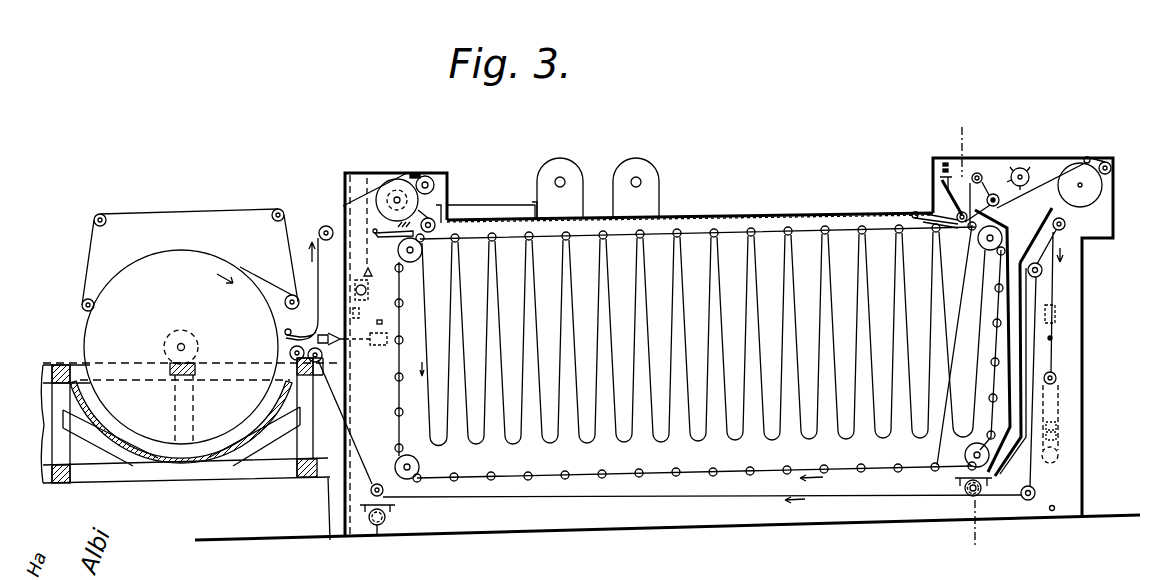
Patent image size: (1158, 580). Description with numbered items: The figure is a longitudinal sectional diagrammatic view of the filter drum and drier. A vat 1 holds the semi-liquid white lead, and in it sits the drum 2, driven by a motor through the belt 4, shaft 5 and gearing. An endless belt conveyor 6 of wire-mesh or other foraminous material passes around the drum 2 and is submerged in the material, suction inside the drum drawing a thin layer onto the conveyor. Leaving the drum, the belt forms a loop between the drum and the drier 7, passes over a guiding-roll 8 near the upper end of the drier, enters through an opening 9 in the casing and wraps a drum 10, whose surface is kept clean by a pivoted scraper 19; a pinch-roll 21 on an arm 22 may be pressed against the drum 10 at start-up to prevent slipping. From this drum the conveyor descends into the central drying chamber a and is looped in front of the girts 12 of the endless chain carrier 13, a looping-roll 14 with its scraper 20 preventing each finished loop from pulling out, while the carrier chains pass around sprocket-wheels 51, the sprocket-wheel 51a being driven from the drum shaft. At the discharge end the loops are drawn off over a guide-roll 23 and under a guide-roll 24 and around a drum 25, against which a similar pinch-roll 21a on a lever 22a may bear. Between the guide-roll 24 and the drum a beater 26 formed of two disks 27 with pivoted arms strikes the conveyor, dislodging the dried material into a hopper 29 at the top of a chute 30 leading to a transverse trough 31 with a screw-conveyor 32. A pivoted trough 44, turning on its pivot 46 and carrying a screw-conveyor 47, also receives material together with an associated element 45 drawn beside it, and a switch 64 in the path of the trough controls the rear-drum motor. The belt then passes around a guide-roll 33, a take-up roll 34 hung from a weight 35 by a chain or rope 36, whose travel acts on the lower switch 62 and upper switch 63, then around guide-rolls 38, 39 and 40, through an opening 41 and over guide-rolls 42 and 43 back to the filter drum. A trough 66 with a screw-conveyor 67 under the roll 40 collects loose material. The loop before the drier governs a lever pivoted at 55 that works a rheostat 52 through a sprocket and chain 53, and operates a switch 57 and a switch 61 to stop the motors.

The vat 1 is at (185, 441).
The drum 2 is at (190, 347).
The belt 4 is at (968, 336).
The shaft 5 is at (198, 365).
The endless belt conveyor 6 is at (676, 349).
The drier 7 is at (343, 186).
The guiding-roll 8 is at (320, 230).
The opening 9 is at (343, 207).
The drum 10 is at (397, 198).
The girts 12 is at (790, 470).
The endless chain carrier 13 is at (740, 472).
The looping-roll 14 is at (440, 210).
The pivoted scraper 19 is at (400, 236).
The scraper 20 is at (465, 206).
The pinch-roll 21 is at (440, 178).
The arm 22 is at (420, 172).
The guide-roll 23 is at (978, 172).
The guide-roll 24 is at (997, 191).
The drum 25 is at (1080, 185).
The beater 26 is at (1041, 183).
The disks 27 is at (1022, 168).
The hopper 29 is at (1013, 340).
The chute 30 is at (1022, 353).
The transverse trough 31 is at (983, 487).
The screw-conveyor 32 is at (958, 484).
The guide-roll 33 is at (1066, 224).
The take-up roll 34 is at (1057, 378).
The weight 35 is at (1058, 432).
The chain or rope 36 is at (1060, 392).
The guide-roll 38 is at (1042, 270).
The guide-roll 39 is at (1036, 494).
The guide-roll 40 is at (377, 480).
The opening 41 is at (347, 432).
The guide-roll 42 is at (322, 356).
The guide-roll 43 is at (290, 353).
The trough 44 is at (958, 226).
The guide 45 is at (925, 223).
The pivot 46 is at (914, 211).
The screw-conveyor 47 is at (962, 211).
The sprocket-wheels 51 is at (966, 452).
The sprocket-wheel 51a is at (985, 251).
The rheostat 52 is at (368, 290).
The sprocket and chain 53 is at (360, 312).
The pivot 55 is at (352, 326).
The switch 57 is at (285, 332).
The switch 61 is at (385, 322).
The lower switch 62 is at (1056, 507).
The upper switch 63 is at (1055, 330).
The switch 64 is at (940, 168).
The trough 66 is at (375, 535).
The screw-conveyor 67 is at (388, 516).
The pinch-roll 21a is at (1111, 167).
The lever 22a is at (1088, 157).
The central drying chamber a is at (703, 348).